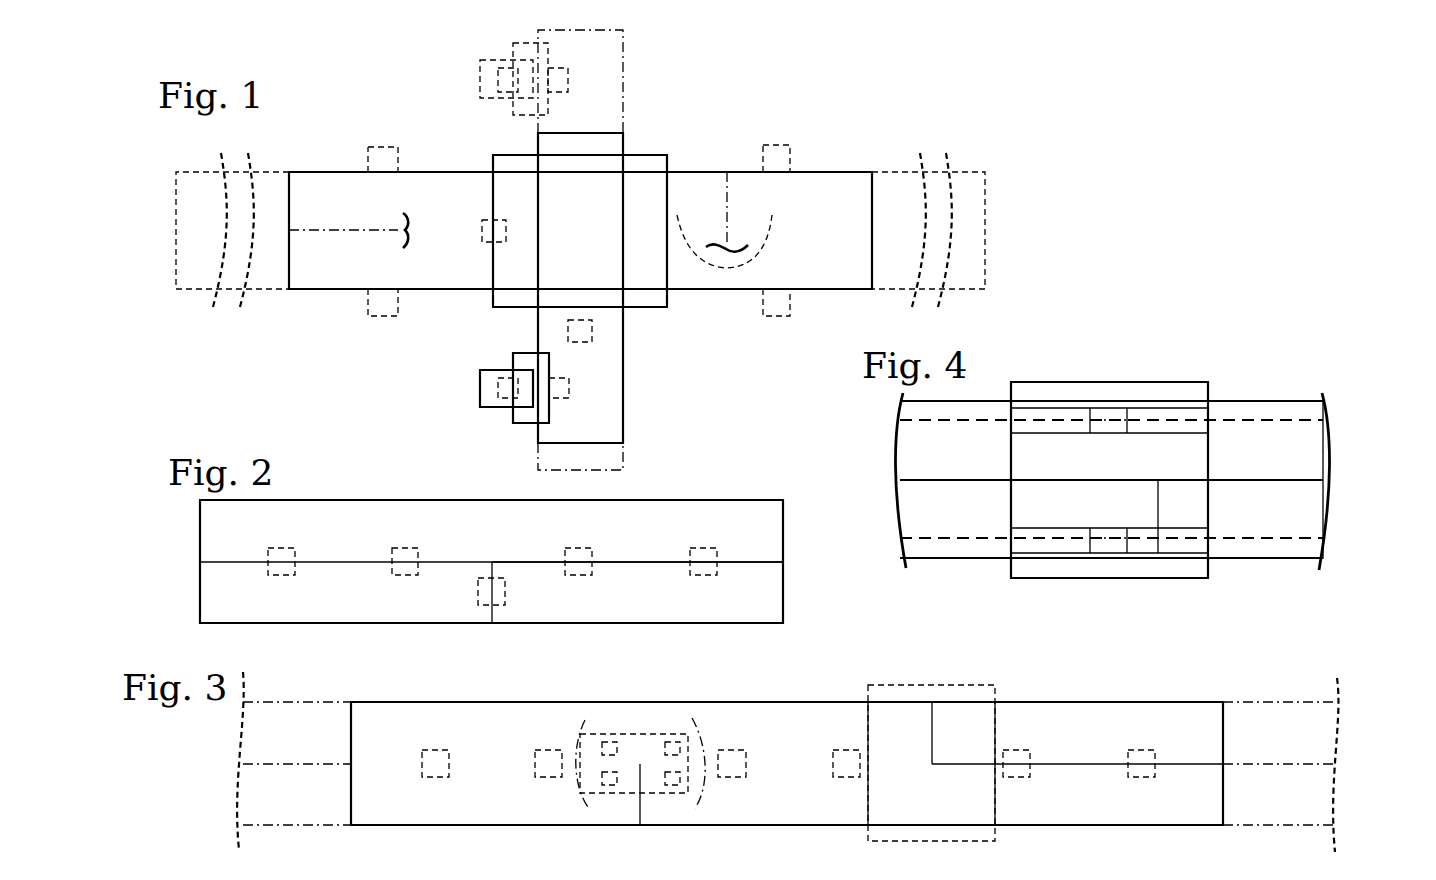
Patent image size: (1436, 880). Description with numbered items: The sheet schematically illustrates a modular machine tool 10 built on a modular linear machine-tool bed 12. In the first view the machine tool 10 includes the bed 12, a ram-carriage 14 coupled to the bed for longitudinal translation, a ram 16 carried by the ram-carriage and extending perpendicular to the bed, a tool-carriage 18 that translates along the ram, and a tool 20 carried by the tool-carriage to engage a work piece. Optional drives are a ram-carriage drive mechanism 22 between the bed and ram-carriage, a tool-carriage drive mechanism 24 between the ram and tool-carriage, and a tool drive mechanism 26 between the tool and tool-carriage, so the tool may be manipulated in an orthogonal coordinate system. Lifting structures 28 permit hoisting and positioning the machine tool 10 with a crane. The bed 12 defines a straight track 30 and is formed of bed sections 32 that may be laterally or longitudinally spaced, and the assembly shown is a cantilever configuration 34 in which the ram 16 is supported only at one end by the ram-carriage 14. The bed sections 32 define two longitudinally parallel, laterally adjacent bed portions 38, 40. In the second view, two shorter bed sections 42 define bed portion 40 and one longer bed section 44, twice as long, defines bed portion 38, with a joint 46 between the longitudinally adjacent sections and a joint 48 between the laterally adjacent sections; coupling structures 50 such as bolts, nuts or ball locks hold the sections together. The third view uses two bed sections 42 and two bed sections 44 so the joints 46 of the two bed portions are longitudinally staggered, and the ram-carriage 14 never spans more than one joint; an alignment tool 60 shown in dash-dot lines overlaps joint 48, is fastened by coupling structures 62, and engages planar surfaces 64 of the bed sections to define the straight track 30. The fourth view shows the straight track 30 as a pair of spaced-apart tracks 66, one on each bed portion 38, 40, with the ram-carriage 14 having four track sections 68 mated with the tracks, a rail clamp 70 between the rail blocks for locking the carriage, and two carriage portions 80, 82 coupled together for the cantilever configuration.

In FIG. 1, the modular machine tool 10 is at (1050, 120).
In FIG. 2, the modular machine tool 10 is at (750, 462).
In FIG. 4, the modular machine tool 10 is at (1330, 316).
In FIG. 3, the modular machine tool 10 is at (1262, 646).
In FIG. 1, the modular linear machine-tool bed 12 is at (703, 172).
In FIG. 2, the modular linear machine-tool bed 12 is at (684, 482).
In FIG. 4, the modular linear machine-tool bed 12 is at (1268, 340).
In FIG. 3, the modular linear machine-tool bed 12 is at (1207, 676).
In FIG. 1, the ram-carriage 14 is at (630, 155).
In FIG. 4, the ram-carriage 14 is at (1060, 382).
In FIG. 3, the ram-carriage 14 is at (926, 685).
In FIG. 1, the ram 16 is at (623, 58).
In FIG. 1, the tool-carriage 18 is at (513, 52).
In FIG. 1, the tool 20 is at (480, 80).
In FIG. 1, the ram-carriage drive mechanism 22 is at (482, 228).
In FIG. 1, the tool-carriage drive mechanism 24 is at (563, 86).
In FIG. 1, the tool drive mechanism 26 is at (505, 93).
In FIG. 1, the lifting structure 28 is at (398, 158).
In FIG. 1, the straight track 30 is at (800, 195).
In FIG. 4, the straight track 30 is at (1300, 420).
In FIG. 3, the straight track 30 is at (930, 805).
In FIG. 1, the bed section 32 is at (376, 272).
In FIG. 2, the bed section 32 is at (740, 500).
In FIG. 4, the bed section 32 is at (1272, 400).
In FIG. 3, the bed section 32 is at (725, 702).
In FIG. 1, the cantilever configuration 34 is at (963, 152).
In FIG. 1, the bed portion 38 is at (287, 181).
In FIG. 2, the bed portion 38 is at (197, 536).
In FIG. 4, the bed portion 38 is at (895, 447).
In FIG. 3, the bed portion 38 is at (345, 742).
In FIG. 1, the bed portion 40 is at (287, 283).
In FIG. 2, the bed portion 40 is at (197, 598).
In FIG. 4, the bed portion 40 is at (895, 515).
In FIG. 3, the bed portion 40 is at (345, 810).
In FIG. 2, the bed section having a first-section length 42 is at (398, 624).
In FIG. 3, the bed section having a first-section length 42 is at (1120, 702).
In FIG. 2, the bed section having a second-section length 44 is at (398, 500).
In FIG. 3, the bed section having a second-section length 44 is at (800, 702).
In FIG. 2, the joint 46 is at (494, 572).
In FIG. 4, the joint 46 is at (1160, 522).
In FIG. 3, the joint 46 is at (934, 742).
In FIG. 2, the joint 48 is at (620, 563).
In FIG. 3, the joint 48 is at (1070, 764).
In FIG. 2, the coupling structure 50 is at (400, 548).
In FIG. 3, the coupling structure 50 is at (548, 750).
In FIG. 3, the alignment tool 60 is at (650, 734).
In FIG. 3, the coupling structure 62 is at (592, 745).
In FIG. 3, the planar surface 64 is at (787, 763).
In FIG. 4, the track 66 is at (1262, 418).
In FIG. 4, the track section 68 is at (1040, 408).
In FIG. 4, the rail clamp 70 is at (1110, 420).
In FIG. 4, the carriage portion 80 is at (1010, 462).
In FIG. 4, the carriage portion 82 is at (1010, 510).